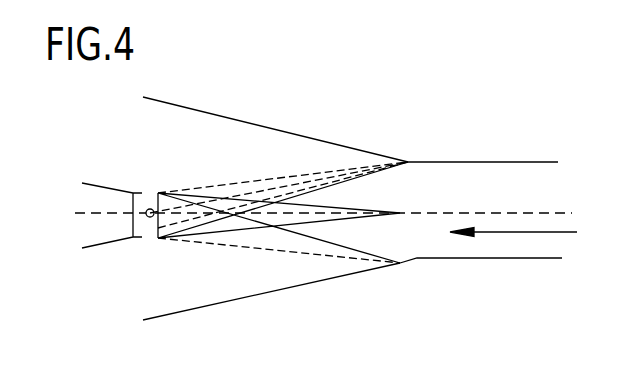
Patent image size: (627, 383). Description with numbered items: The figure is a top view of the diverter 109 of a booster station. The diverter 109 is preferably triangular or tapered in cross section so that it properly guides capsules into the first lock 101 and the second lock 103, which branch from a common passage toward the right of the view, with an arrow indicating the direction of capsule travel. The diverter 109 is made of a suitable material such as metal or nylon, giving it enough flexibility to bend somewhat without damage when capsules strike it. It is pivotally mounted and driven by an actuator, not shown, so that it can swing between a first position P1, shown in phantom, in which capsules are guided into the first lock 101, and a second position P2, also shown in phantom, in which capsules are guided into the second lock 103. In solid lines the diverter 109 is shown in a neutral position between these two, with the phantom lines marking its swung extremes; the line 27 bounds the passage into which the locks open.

The passage (tube) wall 27 is at (512, 162).
The first lock 101 is at (212, 110).
The second lock 103 is at (223, 305).
The diverter 109 is at (272, 176).
The first position P1 is at (328, 253).
The second position P2 is at (312, 173).